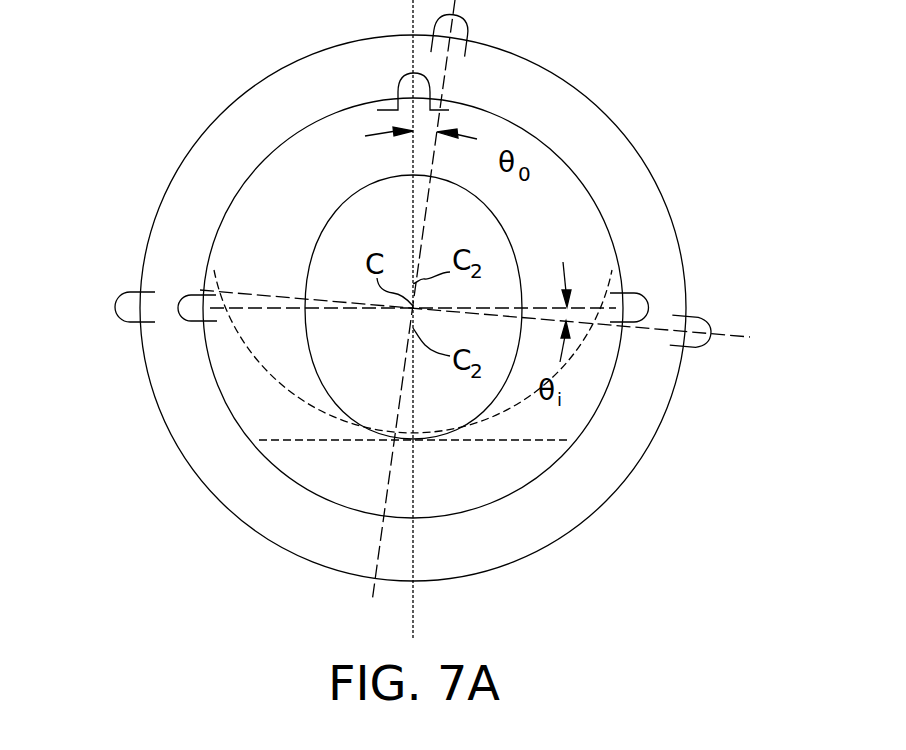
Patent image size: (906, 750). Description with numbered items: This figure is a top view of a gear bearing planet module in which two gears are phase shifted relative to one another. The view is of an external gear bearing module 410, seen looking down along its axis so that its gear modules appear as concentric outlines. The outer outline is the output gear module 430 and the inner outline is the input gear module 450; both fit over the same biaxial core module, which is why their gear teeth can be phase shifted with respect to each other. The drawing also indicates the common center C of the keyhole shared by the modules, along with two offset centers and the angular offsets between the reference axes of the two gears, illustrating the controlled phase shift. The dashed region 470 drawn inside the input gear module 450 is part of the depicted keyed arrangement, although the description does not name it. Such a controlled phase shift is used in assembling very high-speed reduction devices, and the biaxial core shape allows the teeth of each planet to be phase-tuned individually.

The external gear bearing module 410 is at (645, 57).
The output gear module 430 is at (148, 373).
The input gear module 450 is at (598, 202).
The pocket recess 470 is at (603, 383).